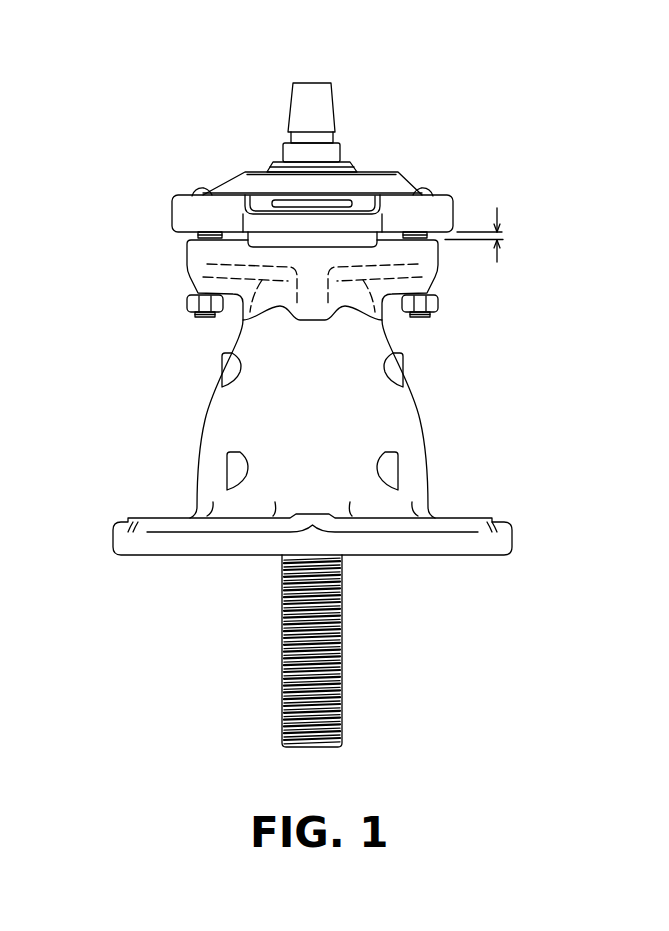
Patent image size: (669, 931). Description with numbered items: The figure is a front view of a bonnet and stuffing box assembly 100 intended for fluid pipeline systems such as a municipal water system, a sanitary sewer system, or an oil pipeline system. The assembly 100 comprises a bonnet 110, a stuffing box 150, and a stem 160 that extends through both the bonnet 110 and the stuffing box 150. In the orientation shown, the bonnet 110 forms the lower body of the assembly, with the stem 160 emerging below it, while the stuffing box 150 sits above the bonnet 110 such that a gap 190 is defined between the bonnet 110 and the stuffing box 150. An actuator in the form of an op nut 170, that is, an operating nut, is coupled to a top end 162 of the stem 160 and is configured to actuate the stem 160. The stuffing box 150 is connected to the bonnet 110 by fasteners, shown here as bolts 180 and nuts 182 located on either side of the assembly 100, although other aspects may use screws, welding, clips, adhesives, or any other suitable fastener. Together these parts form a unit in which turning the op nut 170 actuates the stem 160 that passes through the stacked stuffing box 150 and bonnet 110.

The bonnet and stuffing box assembly 100 is at (92, 178).
The bonnet 110 is at (410, 433).
The stuffing box 150 is at (370, 182).
The stem 160 is at (340, 672).
The top end 162 is at (283, 140).
The op nut 170 is at (320, 107).
The bolts 180 is at (198, 313).
The nuts 182 is at (188, 297).
The gap 190 is at (500, 233).